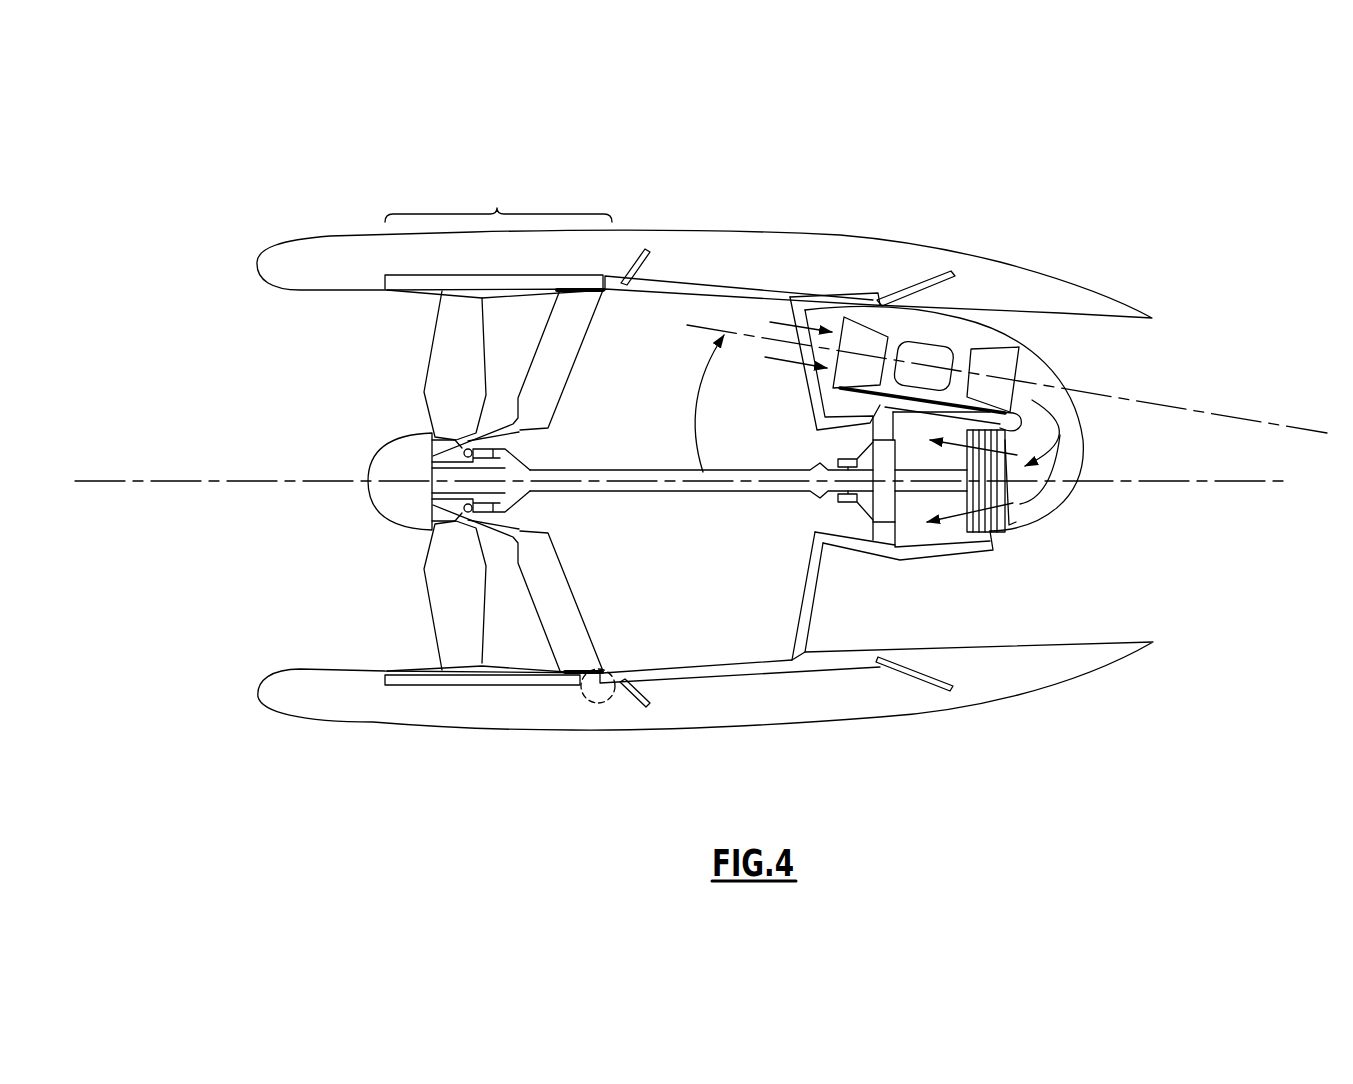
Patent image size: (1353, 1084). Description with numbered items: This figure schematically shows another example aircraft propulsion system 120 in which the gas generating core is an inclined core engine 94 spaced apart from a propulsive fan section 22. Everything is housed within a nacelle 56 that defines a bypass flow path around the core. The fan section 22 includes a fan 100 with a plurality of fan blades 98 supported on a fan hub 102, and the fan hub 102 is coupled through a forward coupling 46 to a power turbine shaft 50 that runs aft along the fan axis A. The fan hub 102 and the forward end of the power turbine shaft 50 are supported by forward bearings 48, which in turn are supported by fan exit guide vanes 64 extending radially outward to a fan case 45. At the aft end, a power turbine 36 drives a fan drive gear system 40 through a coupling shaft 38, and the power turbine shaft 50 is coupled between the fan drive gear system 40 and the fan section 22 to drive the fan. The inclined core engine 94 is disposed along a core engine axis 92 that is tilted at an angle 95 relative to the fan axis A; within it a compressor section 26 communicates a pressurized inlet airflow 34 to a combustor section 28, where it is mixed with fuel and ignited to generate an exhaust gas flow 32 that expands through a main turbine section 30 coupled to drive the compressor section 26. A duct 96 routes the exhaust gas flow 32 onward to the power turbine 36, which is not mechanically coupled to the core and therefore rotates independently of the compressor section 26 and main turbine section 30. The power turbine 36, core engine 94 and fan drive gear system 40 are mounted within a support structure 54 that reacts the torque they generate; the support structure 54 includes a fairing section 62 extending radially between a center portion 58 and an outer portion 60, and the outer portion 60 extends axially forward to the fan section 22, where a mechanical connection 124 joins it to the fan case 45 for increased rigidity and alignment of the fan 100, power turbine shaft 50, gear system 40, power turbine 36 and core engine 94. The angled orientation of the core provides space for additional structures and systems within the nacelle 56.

The fan section 22 is at (498, 212).
The fan case 45 is at (488, 285).
The fan blades 98 is at (426, 361).
The fan exit guide vanes 64 is at (570, 367).
The fan 100 is at (392, 400).
The fan hub 102 is at (453, 490).
The forward coupling 46 is at (528, 492).
The forward bearings 48 is at (524, 511).
The power turbine shaft 50 is at (592, 478).
The angle 95 is at (700, 386).
The core engine axis 92 is at (1167, 403).
The inlet airflow 34 is at (778, 323).
The compressor section 26 is at (859, 338).
The combustor section 28 is at (930, 357).
The main turbine section 30 is at (1023, 368).
The inclined core engine 94 is at (1003, 326).
The duct 96 is at (1087, 444).
The exhaust gas flow 32 is at (1028, 503).
The coupling shaft 38 is at (942, 487).
The power turbine 36 is at (992, 553).
The fan drive gear system 40 is at (883, 522).
The center portion 58 is at (900, 562).
The nacelle 56 is at (366, 712).
The support structure 54 is at (682, 700).
The outer portion 60 is at (755, 678).
The mechanical connection 124 is at (598, 703).
The fairing section 62 is at (805, 384).
The propulsion system 120 is at (1050, 176).
The fan axis A is at (181, 481).